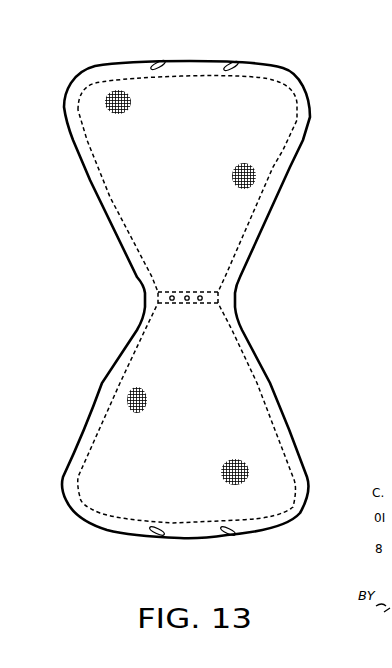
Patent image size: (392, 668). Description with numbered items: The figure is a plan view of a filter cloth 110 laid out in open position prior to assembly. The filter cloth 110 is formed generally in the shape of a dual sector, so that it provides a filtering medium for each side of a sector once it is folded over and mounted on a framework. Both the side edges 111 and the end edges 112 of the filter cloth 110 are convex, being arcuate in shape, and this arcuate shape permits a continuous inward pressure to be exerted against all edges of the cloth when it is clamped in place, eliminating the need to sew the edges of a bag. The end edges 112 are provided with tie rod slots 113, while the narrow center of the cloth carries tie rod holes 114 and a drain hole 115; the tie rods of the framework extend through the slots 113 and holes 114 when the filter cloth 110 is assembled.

The filter cloth 110 is at (216, 134).
The side edges 111 is at (90, 180).
The end edges 112 is at (250, 70).
The tie rod slots 113 is at (160, 63).
The tie rod holes 114 is at (200, 296).
The drain hole 115 is at (187, 300).